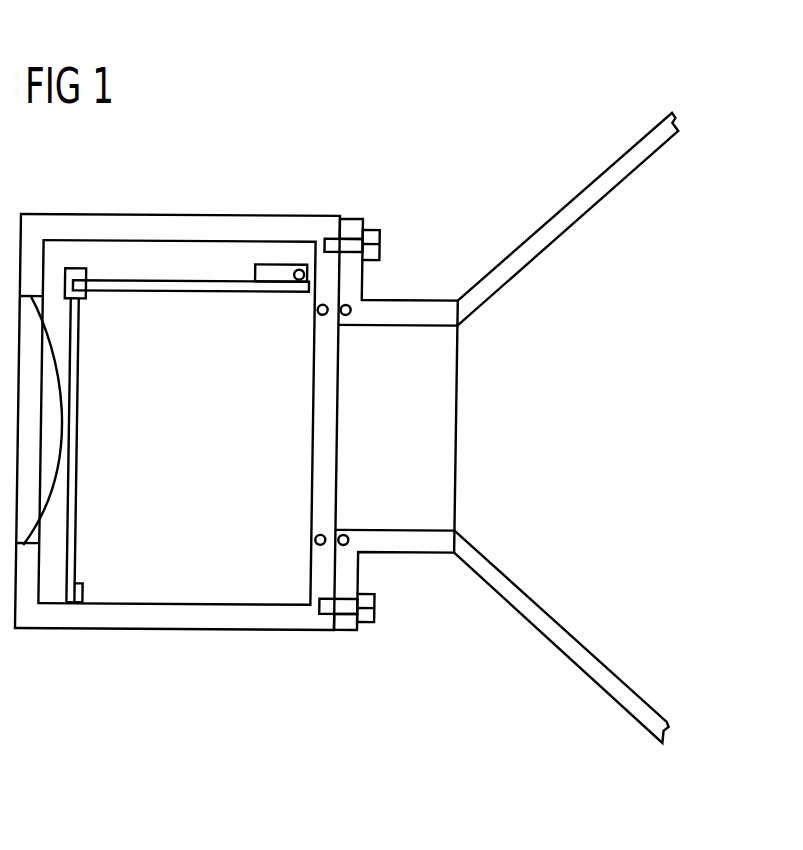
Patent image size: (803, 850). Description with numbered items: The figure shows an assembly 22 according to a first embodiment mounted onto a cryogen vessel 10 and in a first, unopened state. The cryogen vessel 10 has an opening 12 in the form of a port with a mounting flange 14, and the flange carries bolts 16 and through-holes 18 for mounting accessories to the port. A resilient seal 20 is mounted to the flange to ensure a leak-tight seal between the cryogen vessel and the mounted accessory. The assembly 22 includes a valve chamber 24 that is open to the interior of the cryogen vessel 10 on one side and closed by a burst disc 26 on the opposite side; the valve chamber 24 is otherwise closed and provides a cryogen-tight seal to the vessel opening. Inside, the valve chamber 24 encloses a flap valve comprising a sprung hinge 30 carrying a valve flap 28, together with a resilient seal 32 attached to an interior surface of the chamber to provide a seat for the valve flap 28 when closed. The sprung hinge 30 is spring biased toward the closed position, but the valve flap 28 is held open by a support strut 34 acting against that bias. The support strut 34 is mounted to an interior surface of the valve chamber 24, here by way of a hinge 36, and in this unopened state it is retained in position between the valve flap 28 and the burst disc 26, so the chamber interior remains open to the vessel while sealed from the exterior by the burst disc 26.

The cryogen vessel 10 is at (568, 213).
The opening 12 is at (422, 540).
The mounting flange 14 is at (343, 623).
The bolts 16 is at (370, 237).
The through-holes 18 is at (348, 240).
The resilient seal 20 is at (350, 313).
The assembly 22 is at (78, 661).
The valve chamber 24 is at (205, 622).
The burst disc 26 is at (50, 350).
The valve flap 28 is at (143, 287).
The sprung hinge 30 is at (257, 270).
The resilient seal 32 is at (315, 535).
The support strut 34 is at (77, 487).
The hinge 36 is at (83, 588).